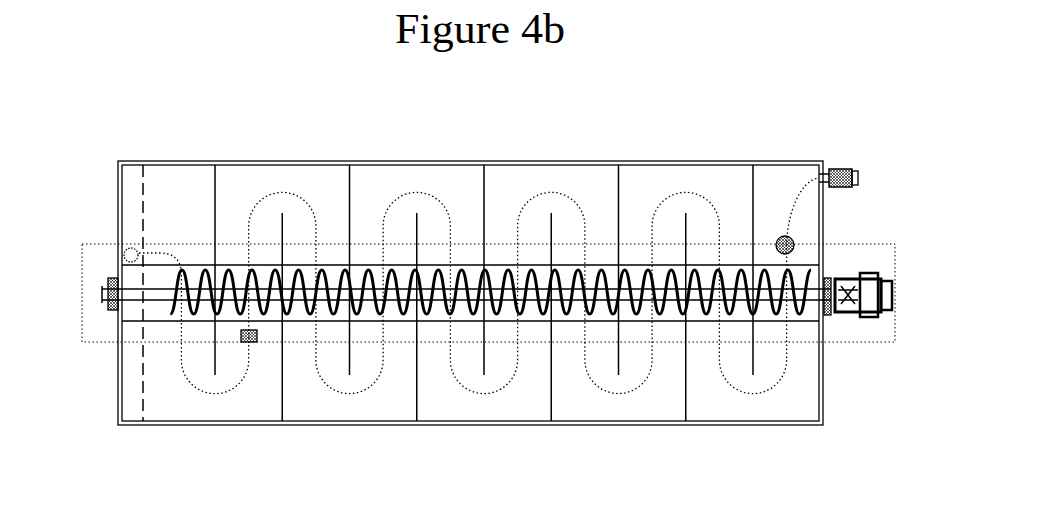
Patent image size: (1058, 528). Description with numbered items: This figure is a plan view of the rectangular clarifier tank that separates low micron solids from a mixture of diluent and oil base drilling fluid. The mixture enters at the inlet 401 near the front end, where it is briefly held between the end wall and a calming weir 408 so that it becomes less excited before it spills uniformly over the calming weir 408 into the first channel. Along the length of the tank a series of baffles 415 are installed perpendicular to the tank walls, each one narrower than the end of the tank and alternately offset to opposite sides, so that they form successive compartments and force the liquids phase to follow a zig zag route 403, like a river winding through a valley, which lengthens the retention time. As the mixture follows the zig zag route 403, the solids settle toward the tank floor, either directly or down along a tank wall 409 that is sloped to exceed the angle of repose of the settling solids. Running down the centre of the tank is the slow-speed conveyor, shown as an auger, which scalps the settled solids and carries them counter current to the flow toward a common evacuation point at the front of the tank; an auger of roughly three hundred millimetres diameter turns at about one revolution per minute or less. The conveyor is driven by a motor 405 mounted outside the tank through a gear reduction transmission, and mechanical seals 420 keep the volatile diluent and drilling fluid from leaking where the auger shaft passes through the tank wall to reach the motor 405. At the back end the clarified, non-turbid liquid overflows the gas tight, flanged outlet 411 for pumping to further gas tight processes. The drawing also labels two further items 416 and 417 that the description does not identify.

The inlet 401 is at (122, 255).
The zig zag route 403 is at (212, 393).
The motor 405 is at (893, 291).
The calming weir 408 is at (142, 412).
The tank wall 409 is at (714, 162).
The outlet 411 is at (858, 178).
The baffles 415 is at (216, 180).
The outlet port 416 is at (788, 237).
The sensor 417 is at (249, 329).
The mechanical seals 420 is at (830, 312).